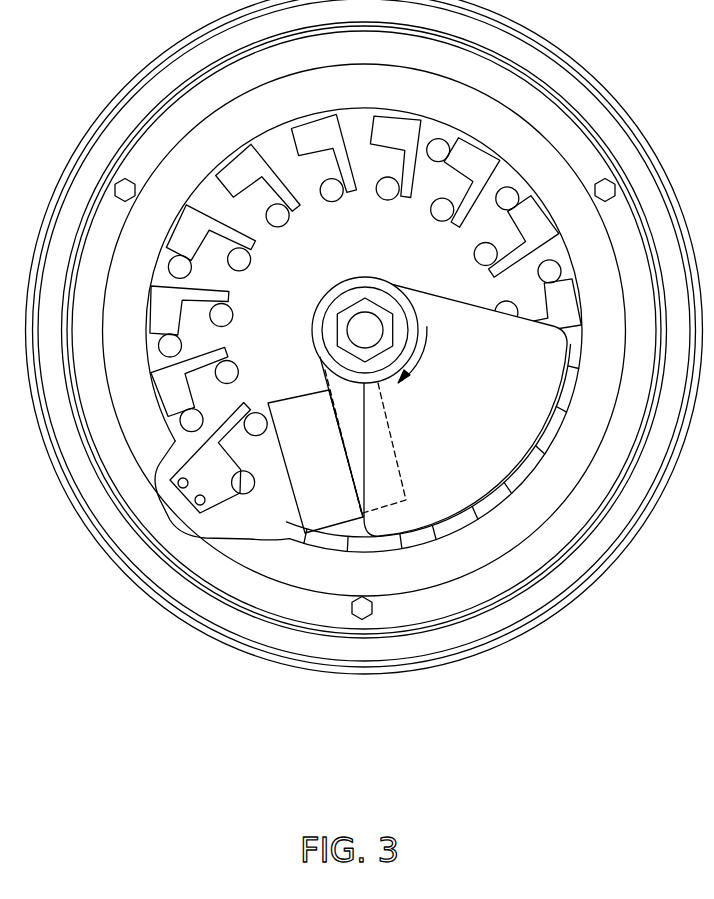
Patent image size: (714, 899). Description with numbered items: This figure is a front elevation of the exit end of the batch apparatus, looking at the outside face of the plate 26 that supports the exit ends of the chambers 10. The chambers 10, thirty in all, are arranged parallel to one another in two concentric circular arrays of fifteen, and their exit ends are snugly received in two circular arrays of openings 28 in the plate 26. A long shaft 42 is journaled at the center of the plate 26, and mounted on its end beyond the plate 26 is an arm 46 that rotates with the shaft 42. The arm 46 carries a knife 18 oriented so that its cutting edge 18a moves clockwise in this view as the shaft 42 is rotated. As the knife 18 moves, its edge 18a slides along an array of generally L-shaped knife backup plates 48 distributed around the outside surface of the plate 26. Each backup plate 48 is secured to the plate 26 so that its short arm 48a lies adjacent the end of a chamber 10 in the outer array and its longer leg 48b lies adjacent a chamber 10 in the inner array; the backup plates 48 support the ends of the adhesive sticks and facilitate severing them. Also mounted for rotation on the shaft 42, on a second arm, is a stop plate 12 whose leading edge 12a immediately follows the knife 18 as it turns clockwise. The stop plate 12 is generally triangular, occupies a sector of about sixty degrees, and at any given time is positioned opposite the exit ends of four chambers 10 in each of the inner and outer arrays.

The chamber 10 is at (383, 189).
The stop plate 12 is at (443, 306).
The leading edge 12a is at (345, 451).
The knife 18 is at (325, 469).
The cutting edge 18a is at (280, 522).
The plate 26 is at (320, 264).
The openings 28 is at (500, 204).
The shaft 42 is at (365, 330).
The arm 46 is at (382, 416).
The knife backup plates 48 is at (343, 327).
The short arm 48a is at (466, 150).
The longer leg 48b is at (457, 228).